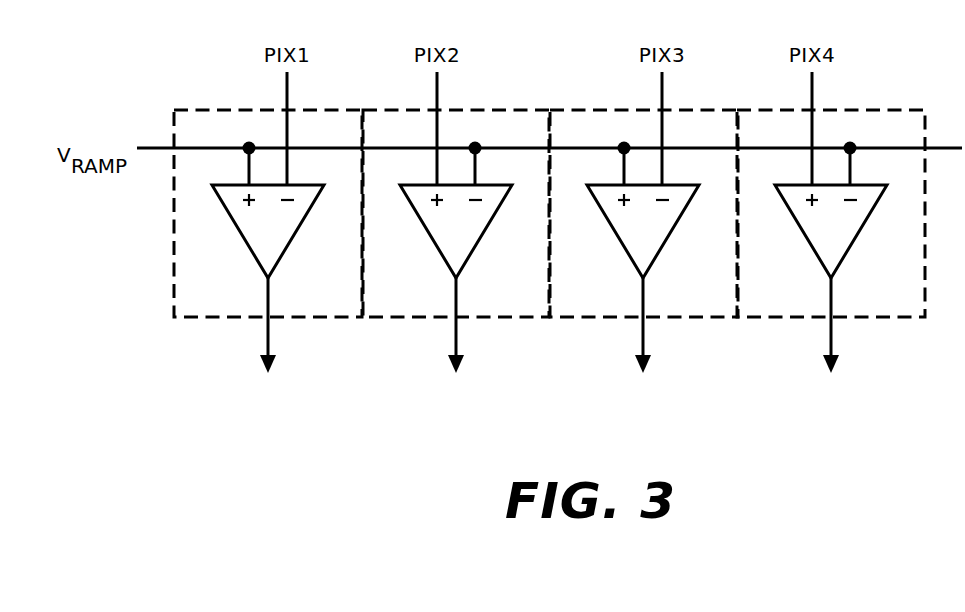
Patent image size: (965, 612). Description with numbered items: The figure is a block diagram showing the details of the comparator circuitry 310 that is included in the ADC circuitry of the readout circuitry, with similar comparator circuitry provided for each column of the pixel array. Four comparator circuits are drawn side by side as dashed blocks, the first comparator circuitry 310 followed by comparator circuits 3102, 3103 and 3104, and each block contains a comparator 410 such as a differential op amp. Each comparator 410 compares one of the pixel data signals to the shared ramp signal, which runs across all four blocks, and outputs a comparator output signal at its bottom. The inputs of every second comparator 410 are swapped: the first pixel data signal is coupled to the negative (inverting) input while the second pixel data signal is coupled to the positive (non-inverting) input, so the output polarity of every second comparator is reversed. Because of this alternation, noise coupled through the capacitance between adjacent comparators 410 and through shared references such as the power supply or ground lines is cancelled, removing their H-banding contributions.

The comparator circuitry 310 is at (212, 108).
The comparator circuit 3102 is at (493, 108).
The comparator circuit 3103 is at (587, 108).
The comparator circuit 3104 is at (887, 108).
The comparator 410 is at (892, 375).